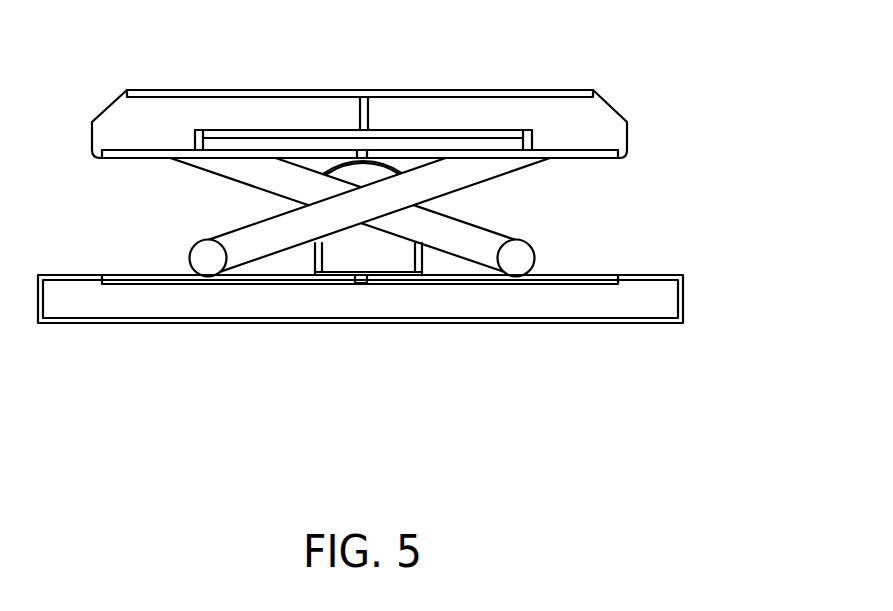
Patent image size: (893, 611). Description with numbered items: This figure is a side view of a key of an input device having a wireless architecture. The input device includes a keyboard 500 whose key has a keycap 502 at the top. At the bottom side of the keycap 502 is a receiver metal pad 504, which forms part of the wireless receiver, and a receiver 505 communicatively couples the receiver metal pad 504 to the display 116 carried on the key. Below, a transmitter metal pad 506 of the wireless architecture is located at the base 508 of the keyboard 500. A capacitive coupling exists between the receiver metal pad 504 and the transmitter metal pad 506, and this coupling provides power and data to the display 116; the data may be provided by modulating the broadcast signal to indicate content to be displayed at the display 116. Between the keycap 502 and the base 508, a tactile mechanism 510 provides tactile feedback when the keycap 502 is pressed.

The display 116 is at (238, 90).
The keyboard 500 is at (395, 270).
The keycap 502 is at (602, 98).
The receiver metal pad 504 is at (590, 160).
The receiver 505 is at (192, 141).
The transmitter metal pad 506 is at (603, 273).
The base 508 is at (684, 297).
The tactile mechanism 510 is at (267, 191).